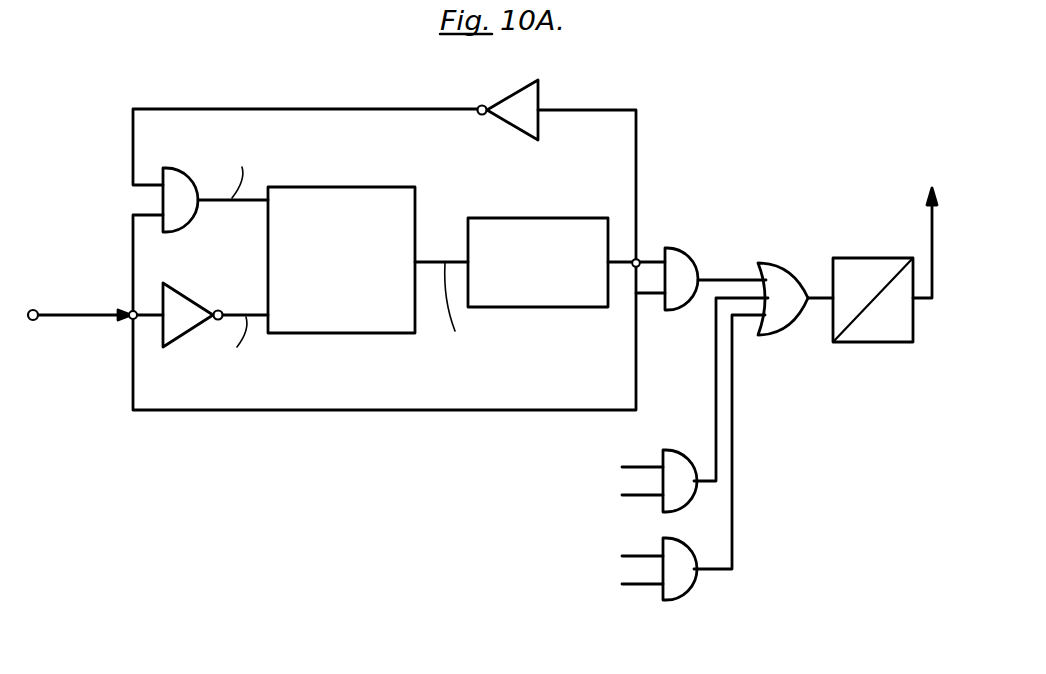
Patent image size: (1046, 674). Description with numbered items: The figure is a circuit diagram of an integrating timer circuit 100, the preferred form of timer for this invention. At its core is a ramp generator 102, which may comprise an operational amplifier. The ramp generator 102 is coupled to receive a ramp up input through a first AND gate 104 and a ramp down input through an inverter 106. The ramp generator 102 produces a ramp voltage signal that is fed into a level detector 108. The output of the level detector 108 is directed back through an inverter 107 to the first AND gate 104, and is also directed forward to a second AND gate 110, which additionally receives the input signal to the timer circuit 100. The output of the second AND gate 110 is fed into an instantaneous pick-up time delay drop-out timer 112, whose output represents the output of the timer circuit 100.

The integrating timer circuit 100 is at (707, 162).
The ramp generator 102 is at (378, 186).
The first AND gate 104 is at (190, 222).
The inverter 106 is at (190, 302).
The inverter 107 is at (517, 92).
The level detector 108 is at (542, 217).
The second AND gate 110 is at (683, 250).
The instantaneous pick-up time delay drop-out timer 112 is at (870, 258).